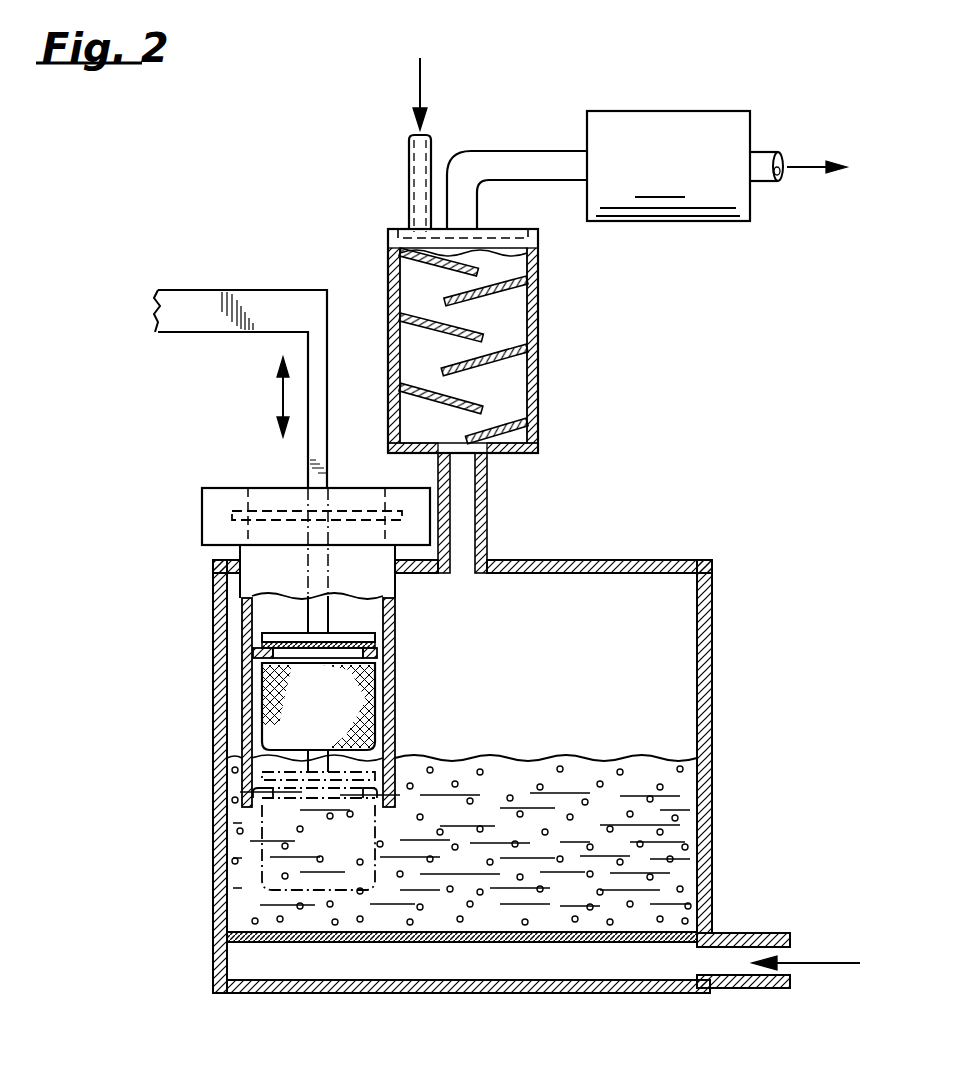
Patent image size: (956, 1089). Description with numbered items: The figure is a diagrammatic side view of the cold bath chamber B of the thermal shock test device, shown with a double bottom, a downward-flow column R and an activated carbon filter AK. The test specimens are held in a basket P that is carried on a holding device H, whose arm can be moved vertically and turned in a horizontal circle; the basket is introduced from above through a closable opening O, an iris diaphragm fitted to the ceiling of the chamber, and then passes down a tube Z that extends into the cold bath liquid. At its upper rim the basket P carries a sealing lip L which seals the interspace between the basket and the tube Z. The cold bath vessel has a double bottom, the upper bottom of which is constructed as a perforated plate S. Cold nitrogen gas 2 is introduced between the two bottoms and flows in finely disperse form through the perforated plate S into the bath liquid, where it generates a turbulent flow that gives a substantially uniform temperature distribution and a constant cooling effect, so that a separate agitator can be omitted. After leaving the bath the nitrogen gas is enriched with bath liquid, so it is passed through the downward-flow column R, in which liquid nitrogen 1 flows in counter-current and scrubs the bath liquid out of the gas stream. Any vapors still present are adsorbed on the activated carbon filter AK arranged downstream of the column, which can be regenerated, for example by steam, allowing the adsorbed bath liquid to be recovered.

The liquid nitrogen 1 is at (423, 88).
The nitrogen gas 2 is at (830, 962).
The holding device H is at (287, 303).
The closable opening O is at (207, 527).
The sealing lip L is at (378, 655).
The tube Z is at (395, 713).
The basket P is at (275, 732).
The cold bath chamber B is at (553, 704).
The downward-flow column R is at (520, 388).
The activated carbon filter AK is at (717, 197).
The perforated plate S is at (348, 942).